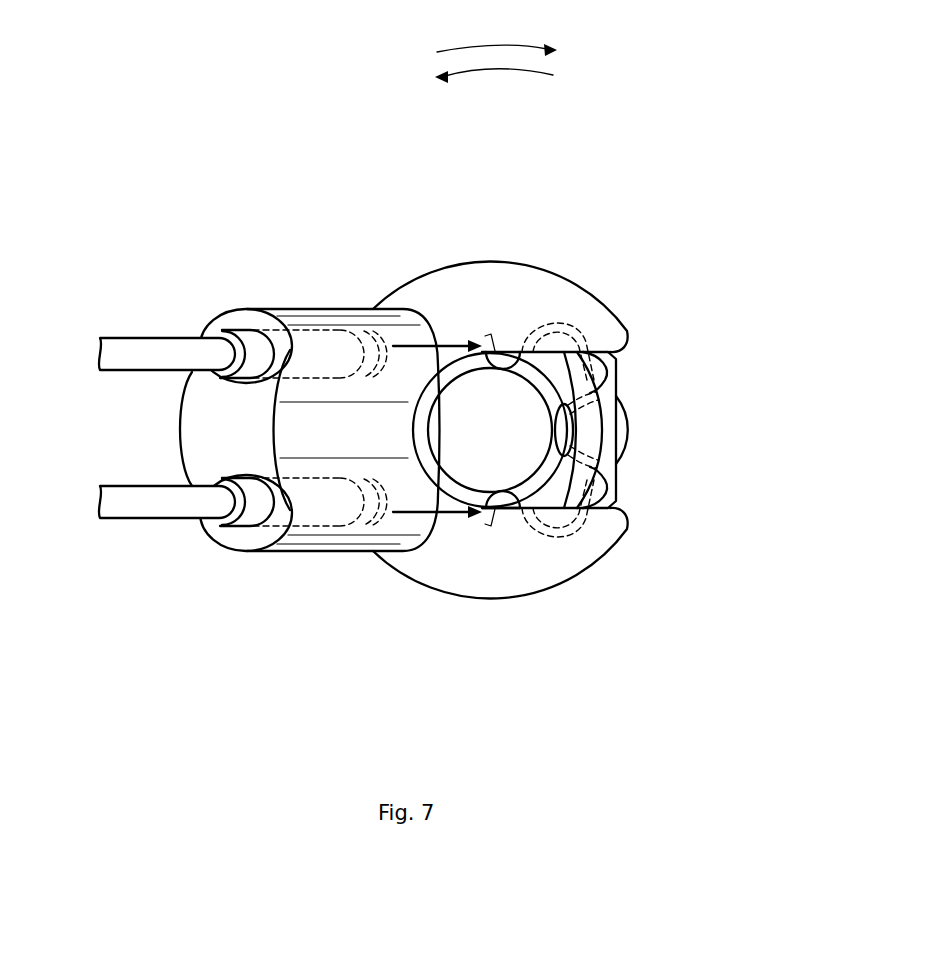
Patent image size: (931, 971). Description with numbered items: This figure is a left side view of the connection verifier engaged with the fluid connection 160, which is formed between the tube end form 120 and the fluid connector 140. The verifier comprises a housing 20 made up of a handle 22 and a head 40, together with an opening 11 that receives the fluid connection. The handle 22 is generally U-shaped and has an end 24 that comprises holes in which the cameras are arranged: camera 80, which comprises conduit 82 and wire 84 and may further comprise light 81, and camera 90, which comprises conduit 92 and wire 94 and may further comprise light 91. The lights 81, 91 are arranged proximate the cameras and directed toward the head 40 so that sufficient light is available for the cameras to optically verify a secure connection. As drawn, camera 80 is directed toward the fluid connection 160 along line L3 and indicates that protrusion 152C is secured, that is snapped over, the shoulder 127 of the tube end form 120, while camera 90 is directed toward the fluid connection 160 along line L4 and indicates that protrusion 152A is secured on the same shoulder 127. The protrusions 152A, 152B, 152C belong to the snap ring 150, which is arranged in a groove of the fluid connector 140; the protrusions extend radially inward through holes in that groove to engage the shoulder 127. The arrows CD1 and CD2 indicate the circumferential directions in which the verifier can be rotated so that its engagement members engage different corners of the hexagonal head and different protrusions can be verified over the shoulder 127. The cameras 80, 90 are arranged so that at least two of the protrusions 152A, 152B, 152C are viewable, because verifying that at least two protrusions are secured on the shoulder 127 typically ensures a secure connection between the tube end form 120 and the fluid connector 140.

The opening 11 is at (640, 363).
The housing 20 is at (268, 309).
The handle 22 is at (301, 309).
The end 24 is at (200, 432).
The head 40 is at (484, 262).
The camera 80 is at (357, 524).
The light 81 is at (371, 528).
The conduit 82 is at (200, 520).
The wire 84 is at (123, 508).
The camera 90 is at (354, 332).
The light 91 is at (378, 336).
The conduit 92 is at (207, 333).
The wire 94 is at (122, 350).
The tube end form 120 is at (532, 484).
The shoulder 127 is at (512, 494).
The fluid connector 140 is at (573, 379).
The snap ring 150 is at (562, 442).
The protrusion 152A is at (506, 352).
The protrusion 152B is at (567, 412).
The protrusion 152C is at (507, 500).
The fluid connection 160 is at (670, 487).
The line L3 is at (441, 522).
The line L4 is at (441, 336).
The first circumferential direction CD1 is at (505, 46).
The second circumferential direction CD2 is at (532, 78).